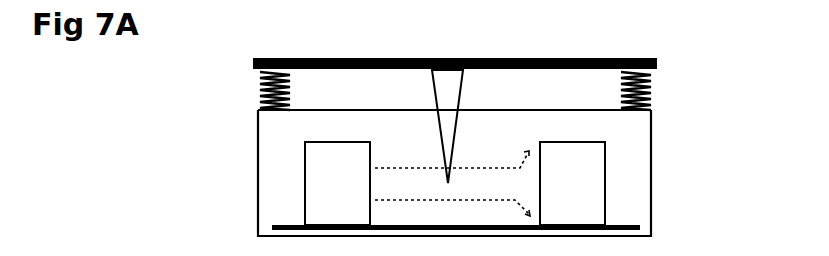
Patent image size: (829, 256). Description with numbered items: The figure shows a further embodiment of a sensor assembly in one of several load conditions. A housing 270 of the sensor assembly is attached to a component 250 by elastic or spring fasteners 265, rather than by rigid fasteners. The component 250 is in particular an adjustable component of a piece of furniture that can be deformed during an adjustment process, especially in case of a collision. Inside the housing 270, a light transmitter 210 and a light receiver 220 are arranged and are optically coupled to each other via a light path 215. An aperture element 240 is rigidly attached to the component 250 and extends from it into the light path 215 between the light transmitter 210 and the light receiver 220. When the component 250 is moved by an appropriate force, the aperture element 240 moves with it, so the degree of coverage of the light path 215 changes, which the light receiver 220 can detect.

The light transmitter 210 is at (337, 184).
The light path 215 is at (452, 183).
The light receiver 220 is at (572, 184).
The aperture element 240 is at (462, 93).
The component 250 is at (390, 58).
The elastic or spring fasteners 265 is at (258, 95).
The housing 270 is at (651, 138).